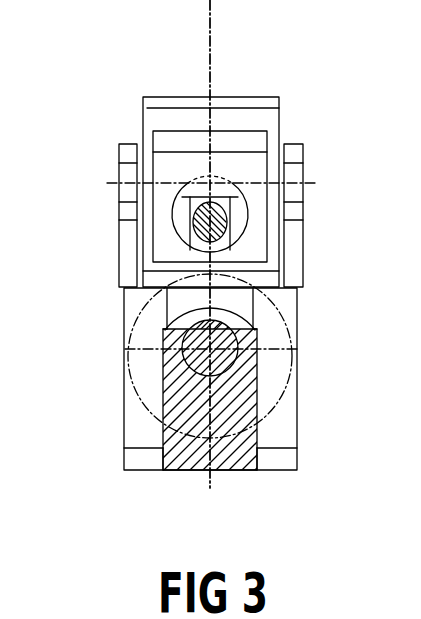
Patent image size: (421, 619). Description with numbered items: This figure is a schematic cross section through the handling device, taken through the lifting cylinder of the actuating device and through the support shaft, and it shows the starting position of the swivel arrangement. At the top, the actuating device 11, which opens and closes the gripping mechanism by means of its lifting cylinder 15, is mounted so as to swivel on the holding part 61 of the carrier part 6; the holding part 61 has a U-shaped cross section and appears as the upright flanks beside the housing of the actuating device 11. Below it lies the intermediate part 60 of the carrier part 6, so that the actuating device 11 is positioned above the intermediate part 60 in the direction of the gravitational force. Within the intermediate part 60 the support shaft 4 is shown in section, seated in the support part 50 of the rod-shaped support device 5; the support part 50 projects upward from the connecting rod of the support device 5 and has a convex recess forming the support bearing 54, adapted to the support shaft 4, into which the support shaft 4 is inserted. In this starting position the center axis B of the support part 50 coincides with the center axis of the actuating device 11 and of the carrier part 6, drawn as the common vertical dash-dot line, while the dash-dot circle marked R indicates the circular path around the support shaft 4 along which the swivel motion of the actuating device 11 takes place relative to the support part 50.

The center axis of the support part B is at (212, 28).
The actuating device 11 is at (243, 132).
The holding part 61 is at (120, 247).
The lifting cylinder 15 is at (226, 228).
The carrier part 6 is at (182, 332).
The support bearing 54 is at (160, 329).
The support shaft 4 is at (186, 381).
The support part 50 is at (243, 346).
The intermediate part 60 is at (280, 370).
The radius circle R is at (262, 403).
The support device 5 is at (183, 447).